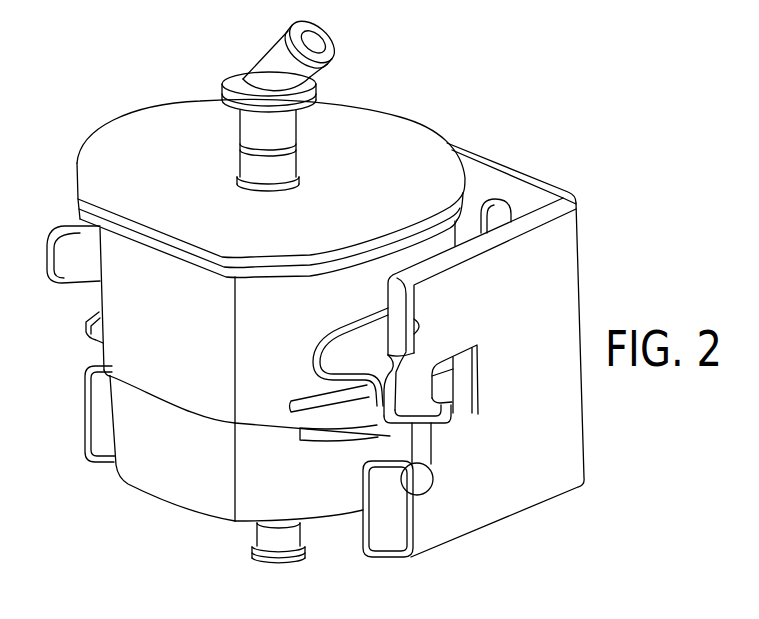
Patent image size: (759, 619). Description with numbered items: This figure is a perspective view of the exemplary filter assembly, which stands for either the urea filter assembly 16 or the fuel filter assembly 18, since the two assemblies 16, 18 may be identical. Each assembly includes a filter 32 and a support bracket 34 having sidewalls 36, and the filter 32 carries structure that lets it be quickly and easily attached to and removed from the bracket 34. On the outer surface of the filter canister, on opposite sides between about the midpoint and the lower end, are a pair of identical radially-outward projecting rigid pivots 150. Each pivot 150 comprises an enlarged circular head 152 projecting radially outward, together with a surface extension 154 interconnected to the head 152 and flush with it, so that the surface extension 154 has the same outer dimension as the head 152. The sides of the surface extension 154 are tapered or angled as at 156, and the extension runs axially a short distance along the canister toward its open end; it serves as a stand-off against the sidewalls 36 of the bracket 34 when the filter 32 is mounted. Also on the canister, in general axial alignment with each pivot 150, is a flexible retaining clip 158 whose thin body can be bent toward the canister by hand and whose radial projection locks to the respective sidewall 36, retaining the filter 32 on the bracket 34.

The urea filter assembly 16 is at (310, 309).
The fuel filter assembly 18 is at (498, 82).
The filter 32 is at (120, 483).
The support bracket 34 is at (542, 170).
The sidewalls 36 is at (506, 502).
The pivot 150 is at (428, 491).
The circular head 152 is at (419, 496).
The surface extension 154 is at (420, 444).
The tapered sides 156 is at (405, 439).
The flexible retaining clip 158 is at (65, 246).